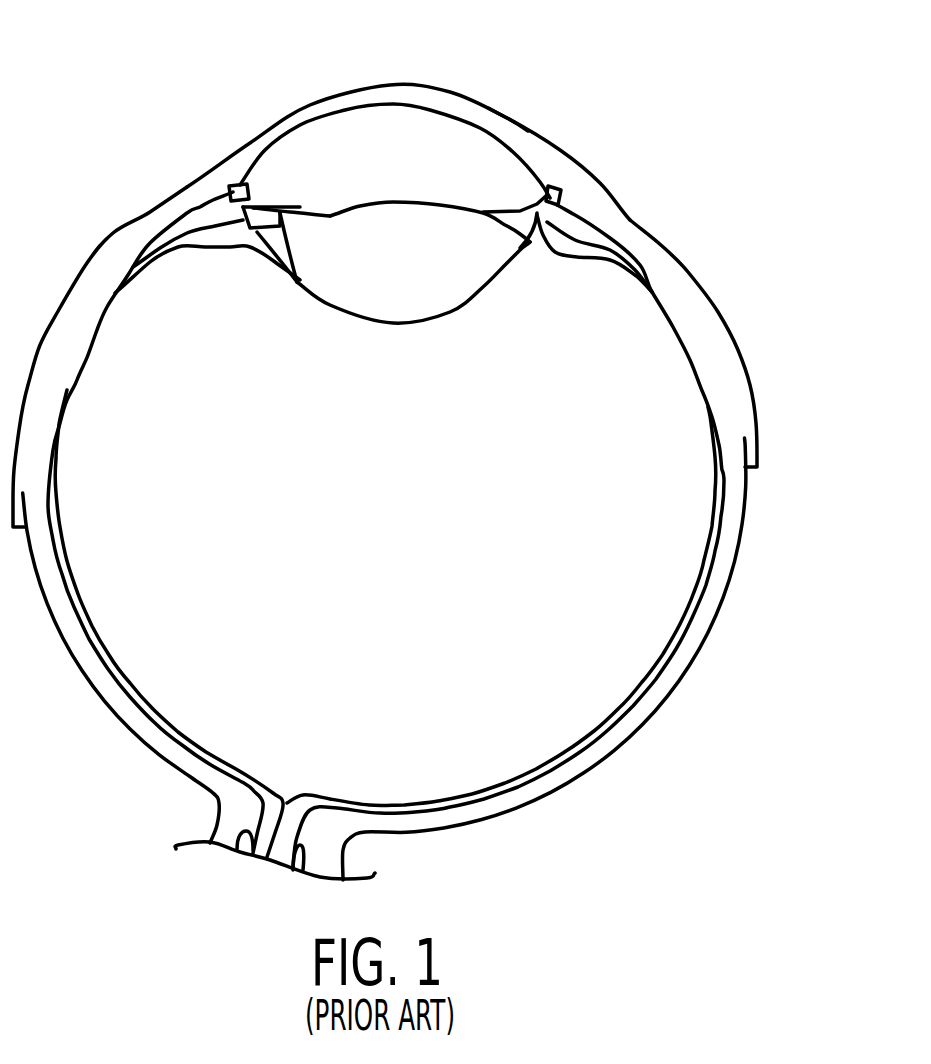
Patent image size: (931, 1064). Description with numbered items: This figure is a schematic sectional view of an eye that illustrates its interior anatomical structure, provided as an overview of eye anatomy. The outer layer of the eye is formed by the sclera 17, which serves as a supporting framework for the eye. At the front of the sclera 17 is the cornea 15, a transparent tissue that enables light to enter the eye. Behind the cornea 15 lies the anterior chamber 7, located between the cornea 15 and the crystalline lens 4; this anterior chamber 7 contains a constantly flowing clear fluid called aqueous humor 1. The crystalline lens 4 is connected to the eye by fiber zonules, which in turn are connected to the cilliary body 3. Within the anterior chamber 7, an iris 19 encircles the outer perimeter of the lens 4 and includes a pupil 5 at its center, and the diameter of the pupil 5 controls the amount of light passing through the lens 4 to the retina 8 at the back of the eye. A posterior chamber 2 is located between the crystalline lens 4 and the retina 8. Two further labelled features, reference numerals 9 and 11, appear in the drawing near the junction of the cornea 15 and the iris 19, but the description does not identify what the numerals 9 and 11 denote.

The aqueous humor 1 is at (400, 153).
The posterior chamber 2 is at (258, 245).
The cilliary body 3 is at (227, 250).
The crystalline lens 4 is at (422, 324).
The pupil 5 is at (323, 183).
The anterior chamber 7 is at (457, 130).
The retina 8 is at (453, 797).
The iris 9 is at (230, 191).
The Schlemm's canal 11 is at (238, 186).
The cornea 15 is at (507, 118).
The sclera 17 is at (117, 230).
The iris 19 is at (300, 285).